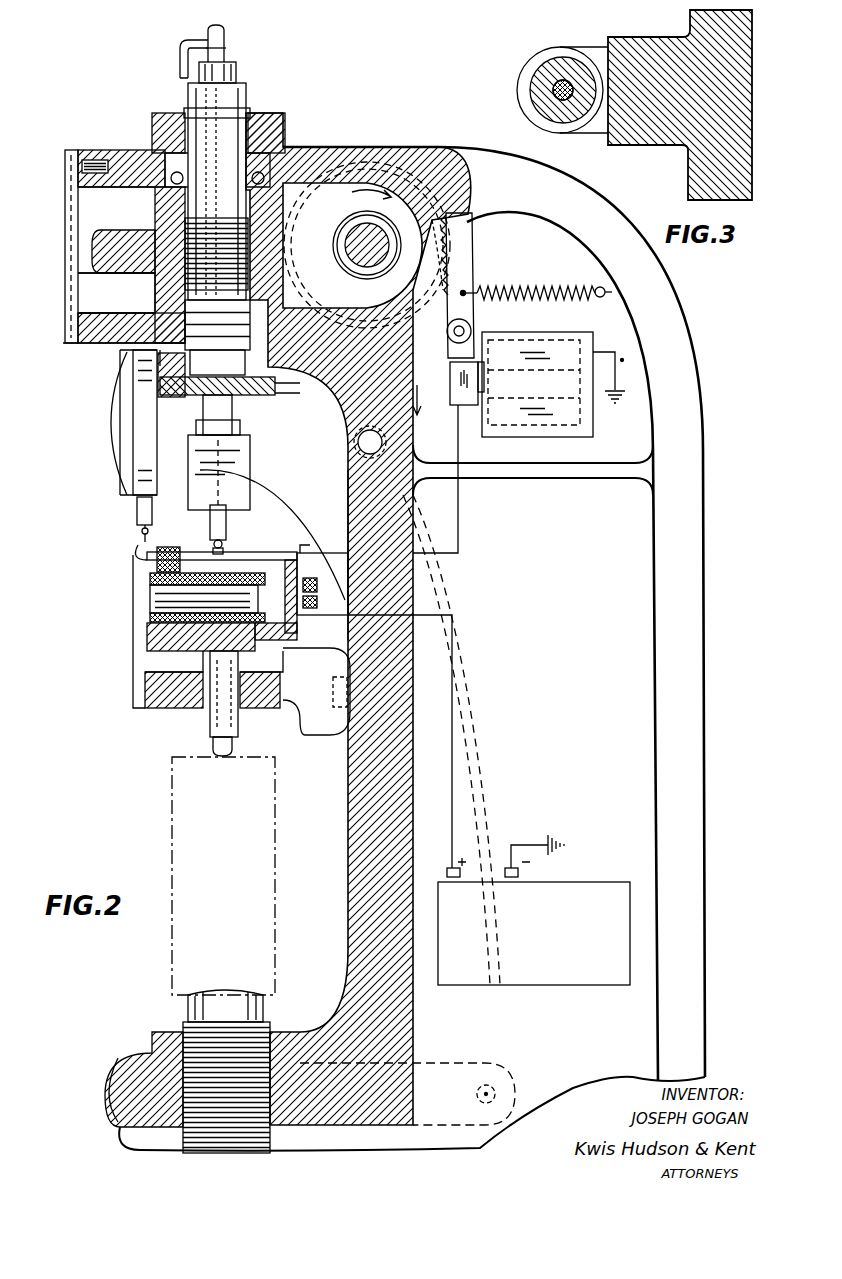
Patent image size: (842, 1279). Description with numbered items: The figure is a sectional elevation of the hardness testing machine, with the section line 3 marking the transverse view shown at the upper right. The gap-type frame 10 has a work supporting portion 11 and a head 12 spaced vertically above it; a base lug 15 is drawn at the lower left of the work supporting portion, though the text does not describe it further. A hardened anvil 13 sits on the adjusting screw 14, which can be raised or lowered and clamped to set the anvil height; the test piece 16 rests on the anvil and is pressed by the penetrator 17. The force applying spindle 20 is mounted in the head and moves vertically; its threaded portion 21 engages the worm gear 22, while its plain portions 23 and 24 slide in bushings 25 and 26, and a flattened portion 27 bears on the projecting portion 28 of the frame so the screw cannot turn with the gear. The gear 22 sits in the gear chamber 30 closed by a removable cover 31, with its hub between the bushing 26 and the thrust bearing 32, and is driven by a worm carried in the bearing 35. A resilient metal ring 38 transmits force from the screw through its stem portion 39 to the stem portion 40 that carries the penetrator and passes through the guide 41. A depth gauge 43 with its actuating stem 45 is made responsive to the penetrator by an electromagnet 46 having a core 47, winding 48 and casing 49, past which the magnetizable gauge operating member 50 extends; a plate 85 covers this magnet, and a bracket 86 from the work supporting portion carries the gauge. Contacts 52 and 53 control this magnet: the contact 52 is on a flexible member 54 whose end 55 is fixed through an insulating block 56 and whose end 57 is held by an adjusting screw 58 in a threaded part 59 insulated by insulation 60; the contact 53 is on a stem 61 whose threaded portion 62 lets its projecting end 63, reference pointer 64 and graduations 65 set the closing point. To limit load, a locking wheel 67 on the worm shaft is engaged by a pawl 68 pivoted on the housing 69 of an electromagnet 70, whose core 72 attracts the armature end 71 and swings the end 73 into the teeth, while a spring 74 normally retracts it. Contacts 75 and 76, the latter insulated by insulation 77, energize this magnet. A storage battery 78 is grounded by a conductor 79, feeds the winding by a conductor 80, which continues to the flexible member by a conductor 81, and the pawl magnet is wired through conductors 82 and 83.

In FIG. 2, the frame 10 is at (692, 684).
In FIG. 2, the work supporting portion 11 is at (128, 1064).
In FIG. 2, the head 12 is at (306, 162).
In FIG. 2, the anvil 13 is at (190, 1000).
In FIG. 2, the adjusting screw 14 is at (184, 1016).
In FIG. 2, the base lug 15 is at (108, 1098).
In FIG. 2, the test piece 16 is at (176, 806).
In FIG. 2, the penetrator 17 is at (212, 746).
In FIG. 2, the spindle 20 is at (247, 106).
In FIG. 2, the threaded portion 21 is at (165, 228).
In FIG. 2, the worm gear 22 is at (120, 278).
In FIG. 2, the plain portion 23 is at (168, 132).
In FIG. 2, the plain portion 24 is at (246, 362).
In FIG. 3, the plain portion 24 is at (543, 74).
In FIG. 2, the bushing 25 is at (186, 110).
In FIG. 2, the bushing 26 is at (252, 331).
In FIG. 2, the flattened portion 27 is at (276, 386).
In FIG. 3, the flattened portion 27 is at (586, 56).
In FIG. 2, the projecting portion 28 is at (356, 441).
In FIG. 3, the projecting portion 28 is at (656, 42).
In FIG. 2, the gear chamber 30 is at (330, 166).
In FIG. 2, the removable cover 31 is at (65, 209).
In FIG. 2, the thrust bearing 32 is at (172, 175).
In FIG. 2, the bearing 35 is at (364, 221).
In FIG. 2, the resilient metal ring 38 is at (250, 470).
In FIG. 2, the stem portion 39 is at (238, 425).
In FIG. 2, the stem portion 40 is at (240, 662).
In FIG. 2, the guide 41 is at (300, 708).
In FIG. 2, the gauge 43 is at (119, 419).
In FIG. 2, the gauge actuating stem 45 is at (137, 511).
In FIG. 2, the electromagnet 46 is at (150, 617).
In FIG. 2, the core 47 is at (150, 599).
In FIG. 2, the energizing winding 48 is at (150, 580).
In FIG. 2, the casing 49 is at (150, 676).
In FIG. 2, the gauge operating member 50 is at (148, 638).
In FIG. 2, the contact 52 is at (170, 550).
In FIG. 2, the contact 53 is at (212, 541).
In FIG. 2, the flexible member 54 is at (223, 550).
In FIG. 2, the end 55 is at (141, 532).
In FIG. 2, the insulating block 56 is at (140, 556).
In FIG. 2, the end 57 is at (352, 548).
In FIG. 2, the adjusting screw 58 is at (317, 605).
In FIG. 2, the threaded part 59 is at (317, 590).
In FIG. 2, the insulation 60 is at (298, 625).
In FIG. 2, the stem 61 is at (227, 520).
In FIG. 2, the threaded portion 62 is at (204, 417).
In FIG. 3, the threaded portion 62 is at (553, 90).
In FIG. 2, the projecting end 63 is at (225, 37).
In FIG. 2, the reference pointer 64 is at (182, 48).
In FIG. 2, the graduations 65 is at (237, 84).
In FIG. 2, the locking wheel 67 is at (458, 226).
In FIG. 2, the pawl 68 is at (470, 290).
In FIG. 2, the housing 69 is at (525, 335).
In FIG. 2, the electromagnet 70 is at (596, 351).
In FIG. 2, the end 71 is at (450, 383).
In FIG. 2, the core 72 is at (485, 380).
In FIG. 2, the end 73 is at (470, 256).
In FIG. 2, the spring 74 is at (555, 288).
In FIG. 2, the contact 75 is at (268, 552).
In FIG. 2, the contact 76 is at (285, 535).
In FIG. 2, the insulation 77 is at (303, 548).
In FIG. 2, the storage battery 78 is at (582, 883).
In FIG. 2, the conductor 79 is at (536, 845).
In FIG. 2, the conductor 80 is at (454, 725).
In FIG. 2, the conductor 81 is at (326, 553).
In FIG. 2, the conductor 82 is at (460, 541).
In FIG. 2, the conductor 83 is at (618, 393).
In FIG. 2, the plate 85 is at (133, 681).
In FIG. 2, the bracket 86 is at (302, 390).
In FIG. 2, the section line 3 is at (289, 395).